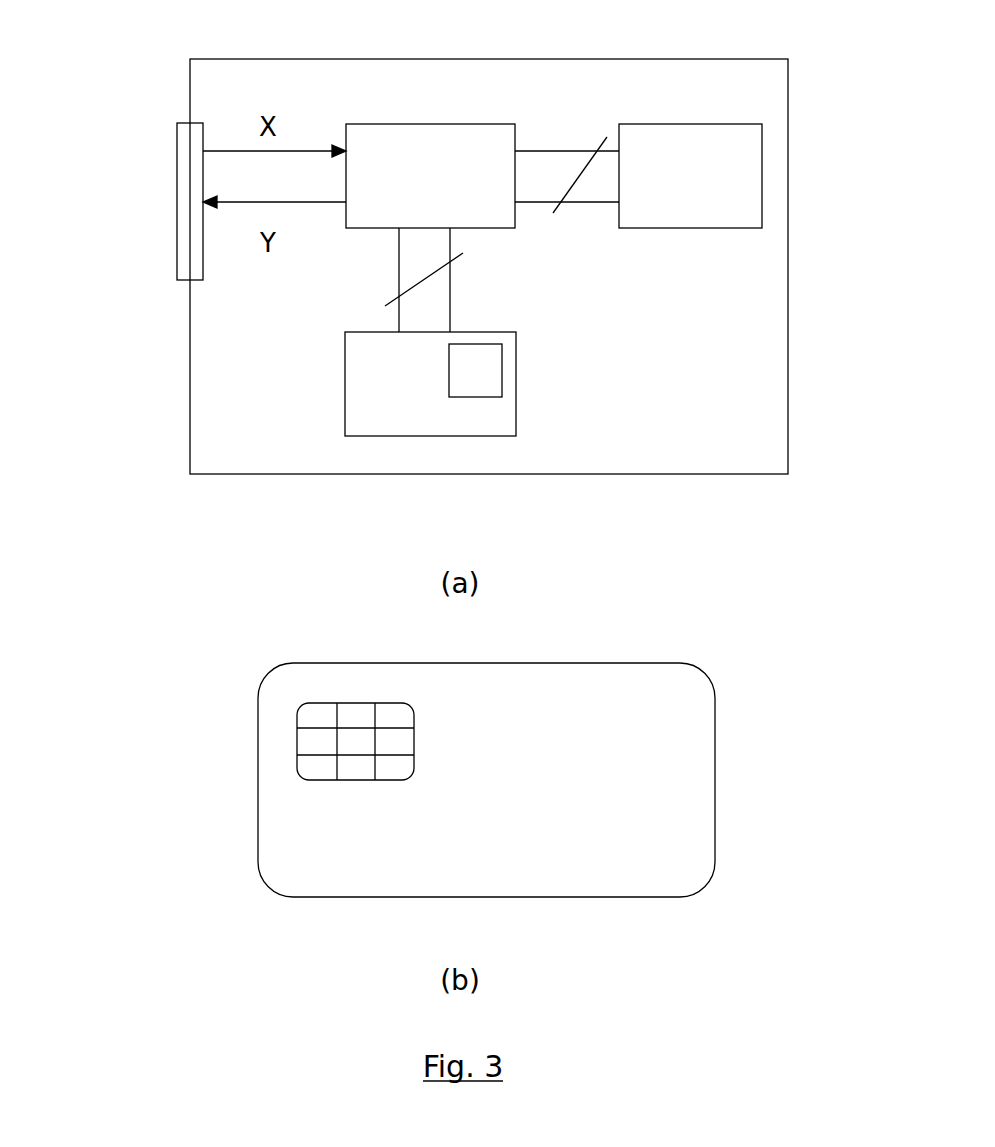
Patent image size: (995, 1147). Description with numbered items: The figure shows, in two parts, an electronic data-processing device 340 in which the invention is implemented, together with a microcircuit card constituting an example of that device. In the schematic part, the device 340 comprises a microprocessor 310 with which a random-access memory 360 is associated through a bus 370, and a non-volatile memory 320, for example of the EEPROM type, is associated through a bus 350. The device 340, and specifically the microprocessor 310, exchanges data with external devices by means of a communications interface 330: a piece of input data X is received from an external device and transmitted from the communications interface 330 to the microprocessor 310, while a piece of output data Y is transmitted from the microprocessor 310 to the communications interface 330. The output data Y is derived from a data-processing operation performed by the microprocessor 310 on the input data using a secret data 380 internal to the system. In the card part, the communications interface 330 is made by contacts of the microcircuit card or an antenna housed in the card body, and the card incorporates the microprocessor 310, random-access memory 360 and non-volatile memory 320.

The microprocessor 310 is at (435, 150).
The non-volatile memory 320 is at (397, 410).
The communications interface 330 is at (190, 242).
The data-processing device 340 is at (215, 430).
The bus 350 is at (407, 265).
The random-access memory 360 is at (738, 207).
The bus 370 is at (540, 163).
The secret data 380 is at (475, 371).